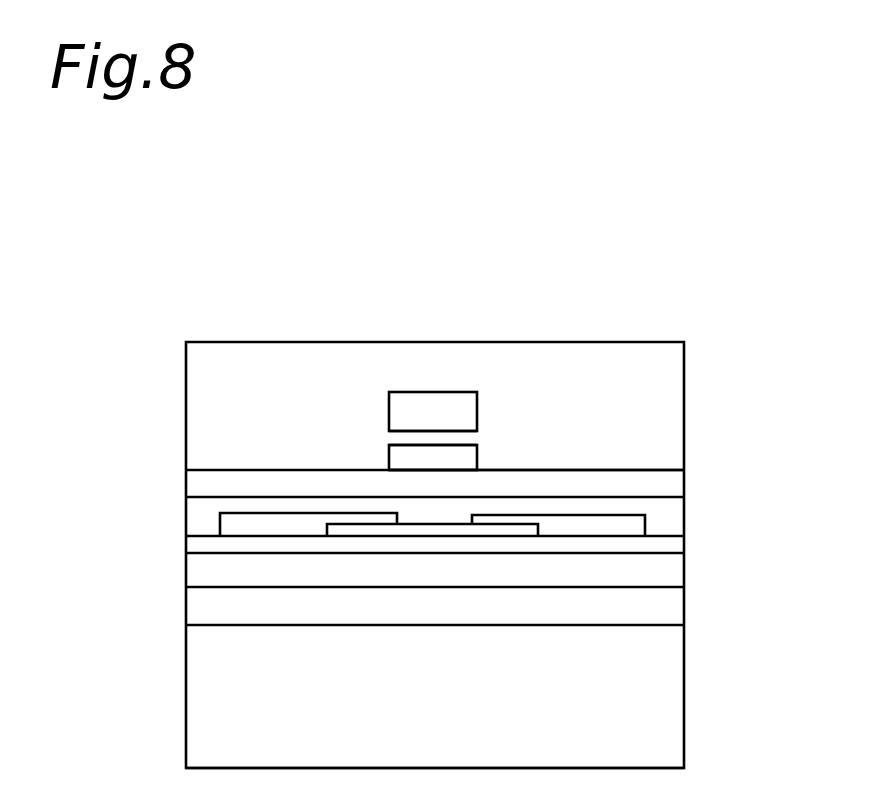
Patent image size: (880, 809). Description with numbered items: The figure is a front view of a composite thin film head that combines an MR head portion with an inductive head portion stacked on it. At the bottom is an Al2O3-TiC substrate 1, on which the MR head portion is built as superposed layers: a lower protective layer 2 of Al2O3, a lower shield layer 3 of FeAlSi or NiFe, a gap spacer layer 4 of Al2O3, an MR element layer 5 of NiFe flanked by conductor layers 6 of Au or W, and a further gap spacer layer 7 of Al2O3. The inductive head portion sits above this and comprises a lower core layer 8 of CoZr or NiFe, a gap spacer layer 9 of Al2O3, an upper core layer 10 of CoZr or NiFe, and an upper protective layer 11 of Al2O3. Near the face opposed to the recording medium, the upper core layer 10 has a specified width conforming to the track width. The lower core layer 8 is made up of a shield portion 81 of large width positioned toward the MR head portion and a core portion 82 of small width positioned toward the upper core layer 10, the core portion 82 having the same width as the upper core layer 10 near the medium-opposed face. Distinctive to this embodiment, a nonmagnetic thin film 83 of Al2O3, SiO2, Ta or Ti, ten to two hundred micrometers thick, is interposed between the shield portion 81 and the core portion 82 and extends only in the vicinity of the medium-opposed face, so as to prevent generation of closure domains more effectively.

The substrate 1 is at (670, 693).
The lower protective layer 2 is at (667, 610).
The lower shield layer 3 is at (667, 572).
The gap spacer layer 4 is at (667, 548).
The MR element layer 5 is at (417, 528).
The conductor layers 6 is at (305, 523).
The gap spacer layer 7 is at (438, 493).
The lower core layer 8 is at (557, 291).
The shield portion 81 is at (572, 482).
The core portion 82 is at (476, 455).
The nonmagnetic thin film 83 is at (433, 466).
The gap spacer layer 9 is at (452, 438).
The upper core layer 10 is at (432, 410).
The upper protective layer 11 is at (515, 365).